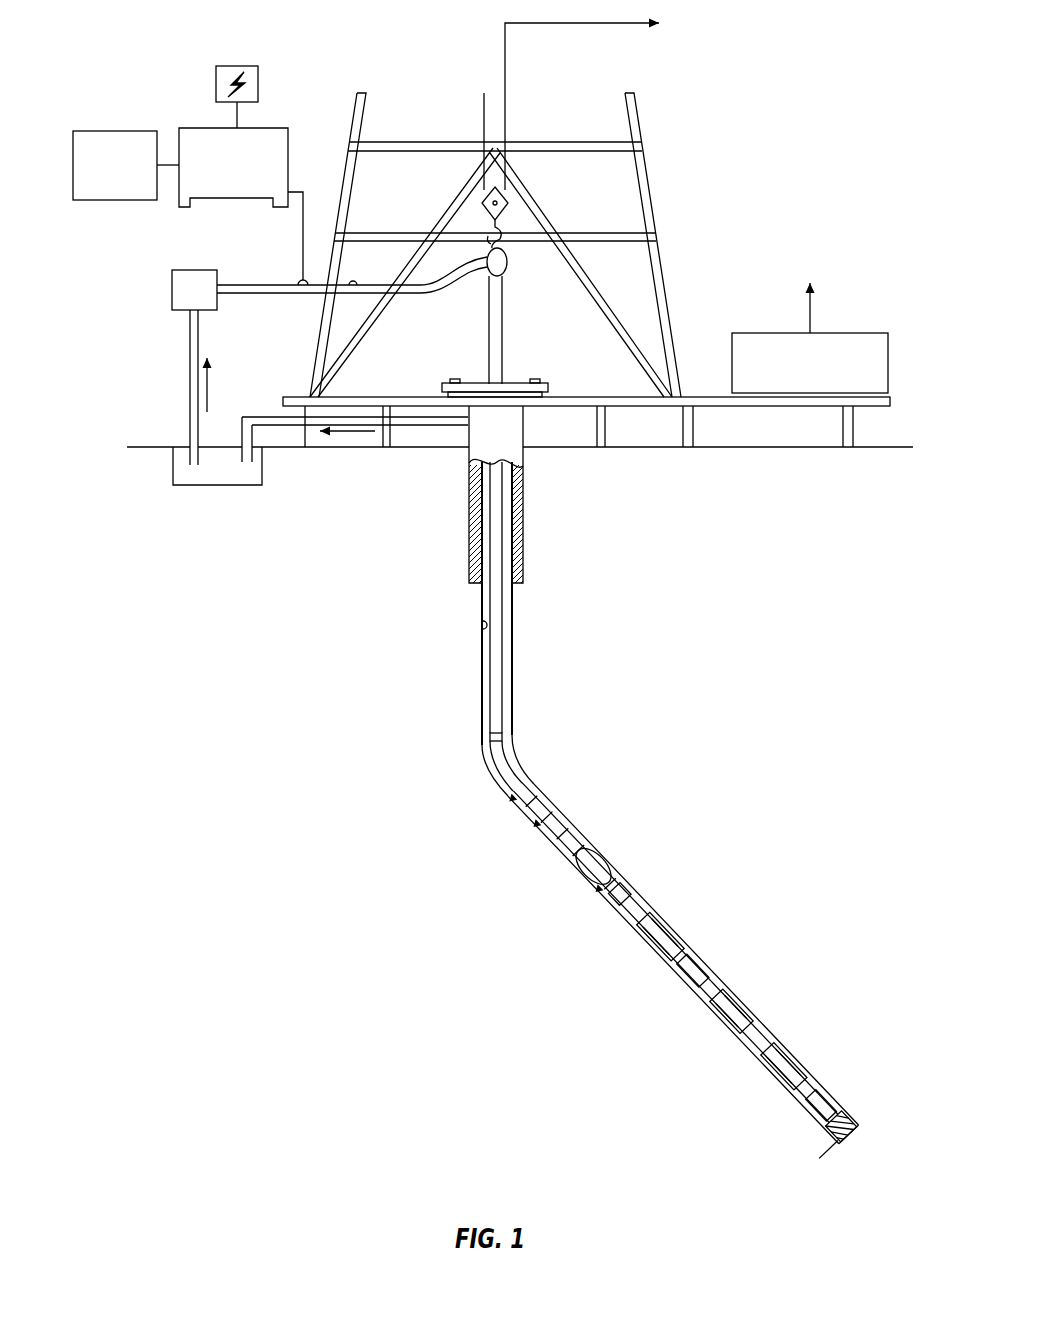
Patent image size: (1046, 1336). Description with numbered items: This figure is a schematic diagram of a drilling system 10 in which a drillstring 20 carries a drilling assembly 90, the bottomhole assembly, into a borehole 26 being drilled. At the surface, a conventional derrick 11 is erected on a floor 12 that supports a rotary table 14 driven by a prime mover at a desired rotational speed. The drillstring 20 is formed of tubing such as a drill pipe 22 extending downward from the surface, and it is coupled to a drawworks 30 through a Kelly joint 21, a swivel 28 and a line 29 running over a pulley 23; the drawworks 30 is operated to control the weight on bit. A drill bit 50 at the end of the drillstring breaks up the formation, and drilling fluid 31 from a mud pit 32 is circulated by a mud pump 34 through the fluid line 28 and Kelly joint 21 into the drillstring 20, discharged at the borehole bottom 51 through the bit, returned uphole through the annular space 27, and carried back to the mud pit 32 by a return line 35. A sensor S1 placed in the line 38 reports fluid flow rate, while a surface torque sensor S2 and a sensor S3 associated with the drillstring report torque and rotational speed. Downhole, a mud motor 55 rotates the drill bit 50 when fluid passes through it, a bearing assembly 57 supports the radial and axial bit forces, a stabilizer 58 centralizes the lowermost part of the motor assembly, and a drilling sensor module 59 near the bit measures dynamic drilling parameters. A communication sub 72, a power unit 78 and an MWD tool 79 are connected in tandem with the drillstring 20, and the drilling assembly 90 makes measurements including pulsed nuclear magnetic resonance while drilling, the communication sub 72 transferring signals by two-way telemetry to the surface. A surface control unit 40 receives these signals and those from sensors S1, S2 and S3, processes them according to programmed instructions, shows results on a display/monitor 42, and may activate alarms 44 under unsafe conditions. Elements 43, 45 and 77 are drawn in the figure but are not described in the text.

The drilling system 10 is at (421, 30).
The derrick 11 is at (655, 248).
The floor 12 is at (677, 396).
The rotary table 14 is at (510, 381).
The drillstring 20 is at (509, 679).
The Kelly joint 21 is at (504, 310).
The drill pipe 22 is at (481, 655).
The pulley 23 is at (499, 202).
The borehole 26 is at (517, 762).
The annular space 27 is at (537, 797).
The swivel 28 is at (485, 273).
The line 29 is at (507, 112).
The drawworks 30 is at (852, 333).
The drilling fluid 31 is at (185, 450).
The mud pit 32 is at (207, 484).
The mud pump 34 is at (190, 269).
The return line 35 is at (435, 427).
The line 38 is at (300, 295).
The surface control unit 40 is at (216, 127).
The display/monitor 42 is at (237, 65).
The sensor 43 is at (300, 281).
The alarms 44 is at (128, 201).
The signal wire 45 is at (296, 192).
The drill bit 50 is at (852, 1088).
The borehole bottom 51 is at (826, 1156).
The downhole motor 55 is at (704, 947).
The bearing assembly 57 is at (819, 1047).
The stabilizer 58 is at (821, 1073).
The drilling sensor module 59 is at (820, 1100).
The communication sub 72 is at (484, 770).
The downhole sensor 77 is at (581, 892).
The power unit 78 is at (506, 806).
The MWD tool 79 is at (524, 833).
The drilling assembly 90 is at (731, 846).
The sensor S1 is at (353, 283).
The surface torque sensor S2 is at (537, 379).
The sensor S3 is at (455, 379).